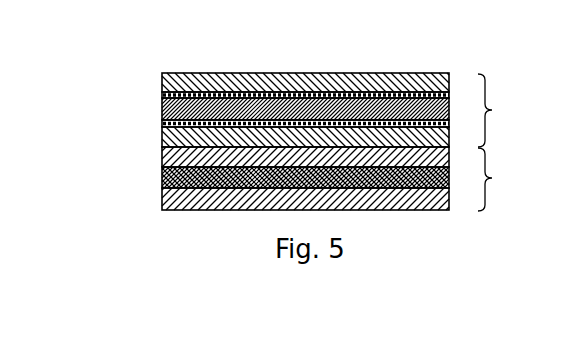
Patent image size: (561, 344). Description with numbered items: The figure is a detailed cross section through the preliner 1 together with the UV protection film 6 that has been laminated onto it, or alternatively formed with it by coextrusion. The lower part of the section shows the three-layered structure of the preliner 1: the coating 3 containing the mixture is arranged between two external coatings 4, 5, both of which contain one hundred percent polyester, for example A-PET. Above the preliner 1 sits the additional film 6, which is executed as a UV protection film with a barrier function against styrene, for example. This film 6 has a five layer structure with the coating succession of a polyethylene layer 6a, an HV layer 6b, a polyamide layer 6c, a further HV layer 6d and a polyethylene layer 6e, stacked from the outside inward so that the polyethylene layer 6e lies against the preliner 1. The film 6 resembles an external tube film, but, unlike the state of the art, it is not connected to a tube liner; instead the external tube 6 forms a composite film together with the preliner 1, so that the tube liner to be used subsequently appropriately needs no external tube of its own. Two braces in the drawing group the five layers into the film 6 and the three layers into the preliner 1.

The preliner 1 is at (499, 179).
The coating 3 is at (162, 175).
The external coating 4 is at (162, 153).
The external coating 5 is at (162, 197).
The film 6 is at (499, 110).
The polyethylene coating 6a is at (162, 80).
The HV coating 6b is at (162, 96).
The polyamide coating 6c is at (162, 117).
The HV coating 6d is at (162, 123).
The polyethylene coating 6e is at (162, 140).